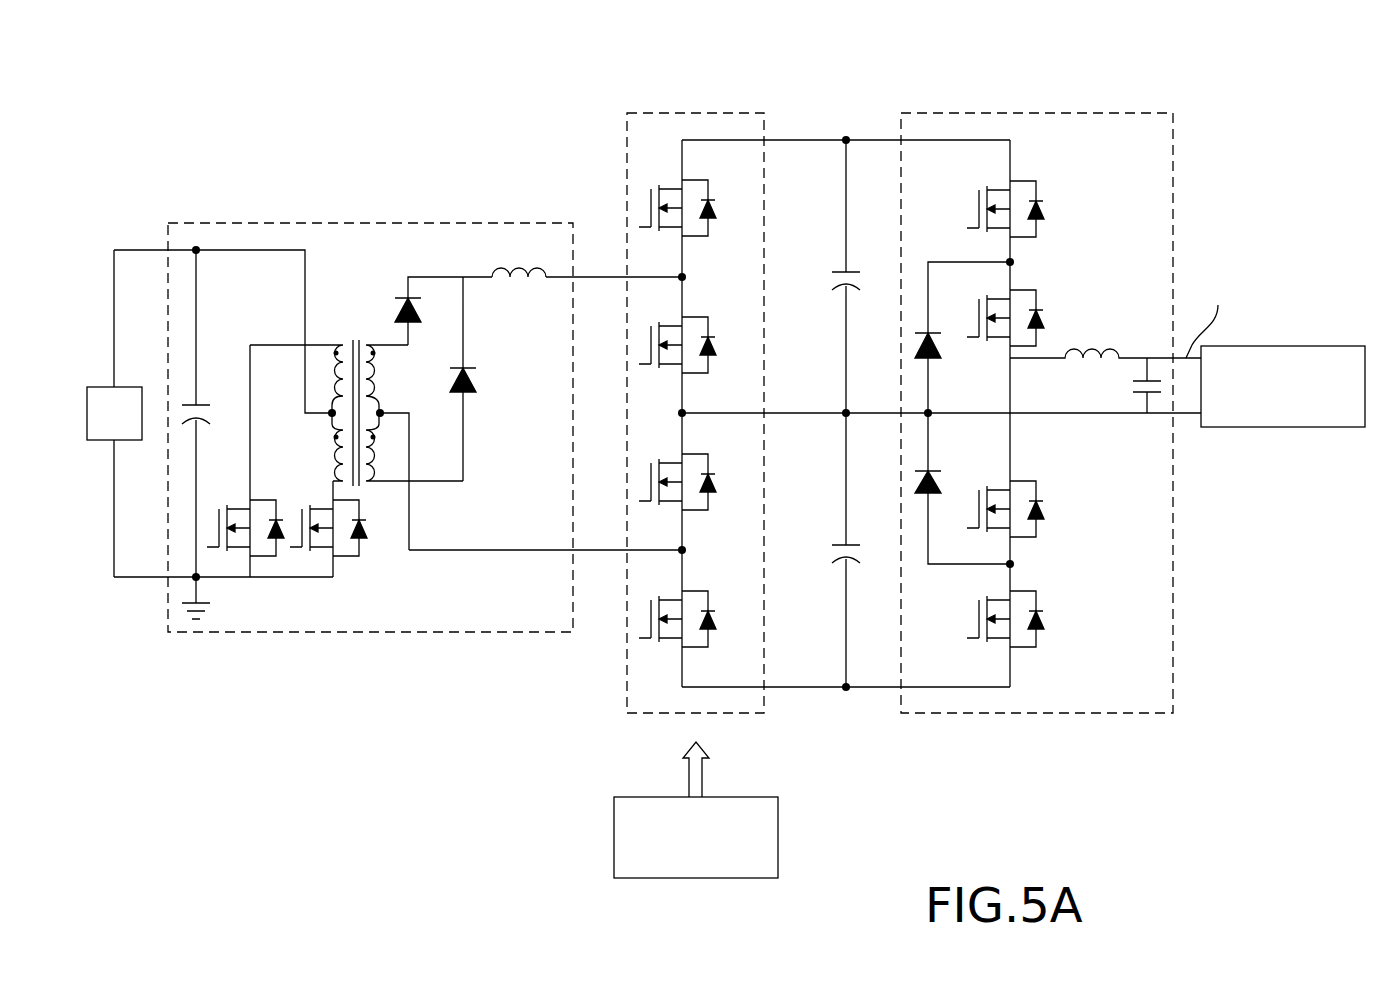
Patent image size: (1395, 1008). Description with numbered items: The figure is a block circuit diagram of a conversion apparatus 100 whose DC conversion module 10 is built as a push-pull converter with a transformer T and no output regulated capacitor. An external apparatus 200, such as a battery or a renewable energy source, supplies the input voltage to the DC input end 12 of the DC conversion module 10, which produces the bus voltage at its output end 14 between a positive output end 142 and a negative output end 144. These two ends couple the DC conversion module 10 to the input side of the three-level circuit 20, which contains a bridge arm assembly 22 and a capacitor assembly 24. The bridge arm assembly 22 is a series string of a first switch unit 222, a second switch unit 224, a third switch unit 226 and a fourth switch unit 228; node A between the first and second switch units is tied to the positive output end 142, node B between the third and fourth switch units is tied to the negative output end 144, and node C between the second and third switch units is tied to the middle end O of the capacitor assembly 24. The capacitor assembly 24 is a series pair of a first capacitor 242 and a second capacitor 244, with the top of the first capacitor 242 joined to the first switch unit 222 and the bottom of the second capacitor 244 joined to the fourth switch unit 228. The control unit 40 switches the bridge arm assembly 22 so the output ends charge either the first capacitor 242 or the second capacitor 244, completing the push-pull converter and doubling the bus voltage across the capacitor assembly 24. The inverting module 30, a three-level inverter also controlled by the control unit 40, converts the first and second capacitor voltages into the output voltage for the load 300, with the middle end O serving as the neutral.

The conversion apparatus 100 is at (744, 28).
The DC conversion module 10 is at (373, 230).
The DC input end 12 is at (157, 250).
The output end 14 is at (580, 192).
The positive output end 142 is at (613, 275).
The negative output end 144 is at (613, 552).
The three-level circuit 20 is at (687, 93).
The bridge arm assembly 22 is at (694, 120).
The first switch unit 222 is at (722, 207).
The second switch unit 224 is at (722, 345).
The third switch unit 226 is at (722, 482).
The fourth switch unit 228 is at (722, 619).
The capacitor assembly 24 is at (846, 137).
The first capacitor 242 is at (838, 277).
The second capacitor 244 is at (838, 548).
The inverting module 30 is at (1053, 118).
The control unit 40 is at (722, 803).
The external apparatus 200 is at (103, 393).
The load 300 is at (1283, 350).